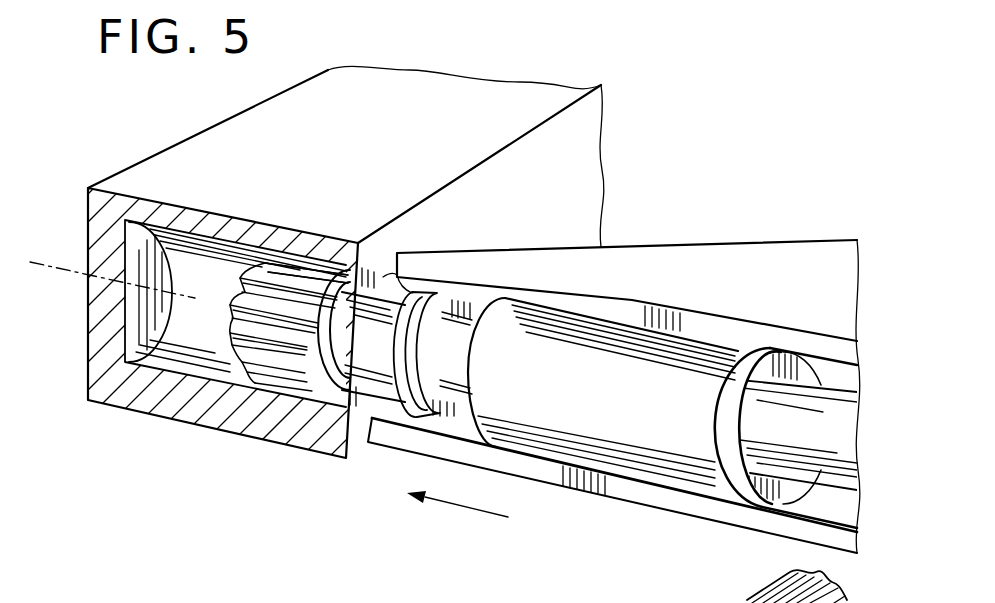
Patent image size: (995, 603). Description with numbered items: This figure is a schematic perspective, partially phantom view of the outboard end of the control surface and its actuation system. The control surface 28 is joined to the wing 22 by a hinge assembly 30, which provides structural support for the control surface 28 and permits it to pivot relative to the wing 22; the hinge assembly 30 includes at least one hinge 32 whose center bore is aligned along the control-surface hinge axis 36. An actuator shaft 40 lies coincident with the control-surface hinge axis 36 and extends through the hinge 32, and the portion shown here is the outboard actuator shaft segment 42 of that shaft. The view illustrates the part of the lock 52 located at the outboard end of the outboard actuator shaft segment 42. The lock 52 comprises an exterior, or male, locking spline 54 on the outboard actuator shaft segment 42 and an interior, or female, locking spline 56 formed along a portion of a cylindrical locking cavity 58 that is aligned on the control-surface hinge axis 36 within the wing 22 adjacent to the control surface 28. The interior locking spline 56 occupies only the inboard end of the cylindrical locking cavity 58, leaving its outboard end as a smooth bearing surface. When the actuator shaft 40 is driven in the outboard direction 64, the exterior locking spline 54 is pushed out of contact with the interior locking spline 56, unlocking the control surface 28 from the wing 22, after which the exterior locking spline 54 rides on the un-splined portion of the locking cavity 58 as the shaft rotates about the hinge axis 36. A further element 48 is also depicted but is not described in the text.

The wing 22 is at (234, 136).
The control surface 28 is at (731, 256).
The hinge assembly 30 is at (655, 502).
The hinge 32 is at (586, 448).
The control-surface hinge axis 36 is at (55, 262).
The actuator shaft 40 is at (827, 407).
The outboard actuator shaft segment 42 is at (772, 504).
The knurled member 48 is at (755, 586).
The lock 52 is at (232, 396).
The exterior locking spline 54 is at (282, 355).
The interior locking spline 56 is at (287, 263).
The cylindrical locking cavity 58 is at (193, 262).
The outboard direction 64 is at (447, 503).